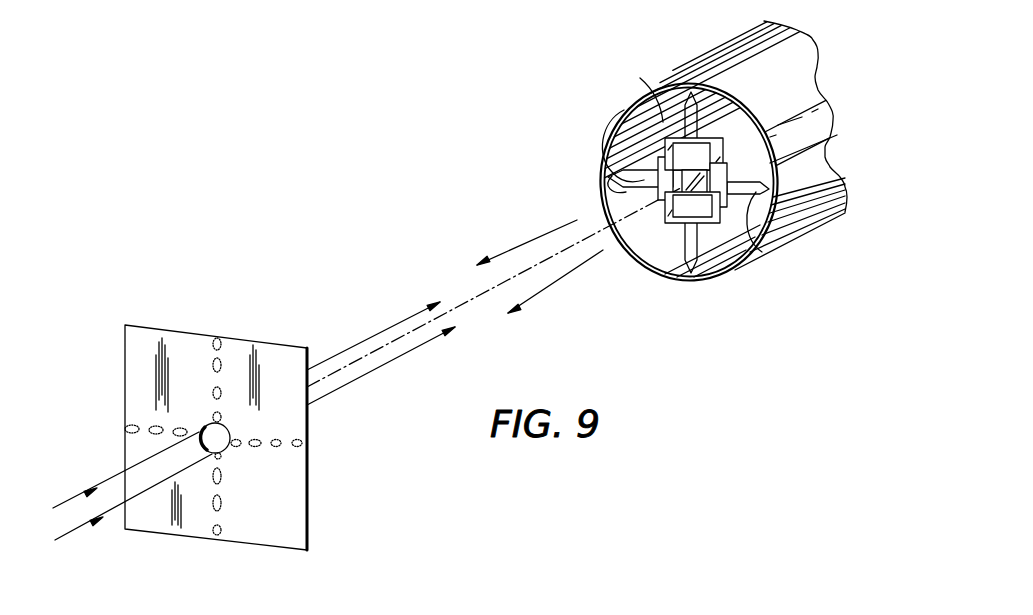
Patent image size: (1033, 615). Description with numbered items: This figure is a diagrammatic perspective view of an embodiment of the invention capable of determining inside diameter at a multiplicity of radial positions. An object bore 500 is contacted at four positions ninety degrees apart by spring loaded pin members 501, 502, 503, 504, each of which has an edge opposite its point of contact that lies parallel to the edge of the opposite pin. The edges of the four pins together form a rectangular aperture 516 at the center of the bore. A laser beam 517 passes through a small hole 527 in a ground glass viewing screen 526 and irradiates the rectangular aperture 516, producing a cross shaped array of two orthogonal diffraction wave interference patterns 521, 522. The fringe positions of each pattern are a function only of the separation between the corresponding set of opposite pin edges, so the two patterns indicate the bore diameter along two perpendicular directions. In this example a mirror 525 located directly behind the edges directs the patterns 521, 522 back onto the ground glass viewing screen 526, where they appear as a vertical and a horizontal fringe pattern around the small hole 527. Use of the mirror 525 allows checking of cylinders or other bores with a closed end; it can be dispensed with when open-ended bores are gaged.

The object bore 500 is at (743, 62).
The spring loaded pin member 501 is at (668, 98).
The rectangular aperture 516 is at (627, 116).
The mirror 525 is at (735, 104).
The spring loaded pin member 502 is at (608, 178).
The spring loaded pin member 503 is at (680, 262).
The spring loaded pin member 504 is at (764, 245).
The diffraction wave interference pattern 521 is at (218, 357).
The diffraction wave interference pattern 522 is at (283, 437).
The ground glass viewing screen 526 is at (308, 535).
The small hole 527 is at (225, 452).
The laser beam 517 is at (73, 497).